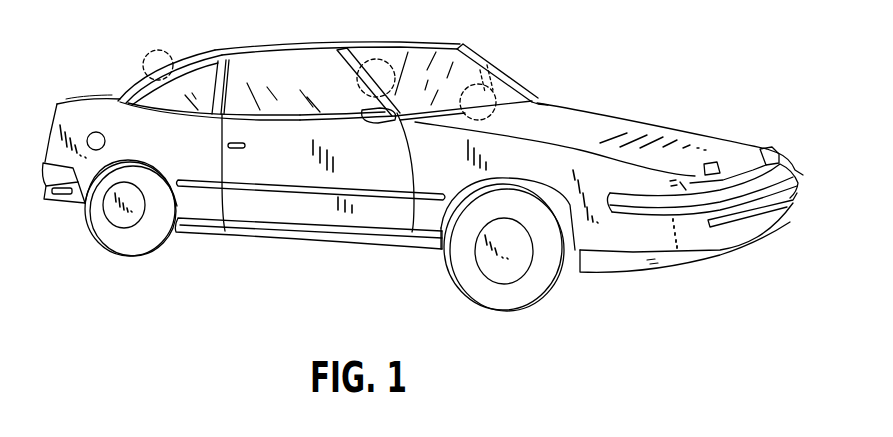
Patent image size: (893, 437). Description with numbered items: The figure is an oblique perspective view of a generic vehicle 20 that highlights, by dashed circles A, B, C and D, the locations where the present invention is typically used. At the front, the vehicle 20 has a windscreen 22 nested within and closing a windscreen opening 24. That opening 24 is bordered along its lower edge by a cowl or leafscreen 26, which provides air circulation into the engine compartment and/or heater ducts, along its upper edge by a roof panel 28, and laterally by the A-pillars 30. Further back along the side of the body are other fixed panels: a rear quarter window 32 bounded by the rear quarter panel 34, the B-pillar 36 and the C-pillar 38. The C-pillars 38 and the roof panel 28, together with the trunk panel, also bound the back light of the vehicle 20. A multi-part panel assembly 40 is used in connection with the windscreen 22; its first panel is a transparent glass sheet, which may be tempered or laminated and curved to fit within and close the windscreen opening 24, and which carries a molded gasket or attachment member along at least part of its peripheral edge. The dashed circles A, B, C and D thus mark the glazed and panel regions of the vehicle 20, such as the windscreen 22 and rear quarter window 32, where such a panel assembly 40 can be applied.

The vehicle 20 is at (546, 34).
The windscreen 22 is at (481, 58).
The windscreen opening 24 is at (457, 45).
The cowl or leafscreen 26 is at (438, 121).
The roof panel 28 is at (333, 32).
The A-pillars 30 is at (350, 71).
The rear quarter window 32 is at (169, 102).
The rear quarter panel 34 is at (137, 150).
The B-pillar 36 is at (233, 64).
The C-pillar 38 is at (192, 54).
The multi-part panel assembly 40 is at (538, 100).
The dashed circle A is at (497, 84).
The dashed circle B is at (384, 58).
The dashed circle C is at (254, 57).
The dashed circle D is at (148, 54).